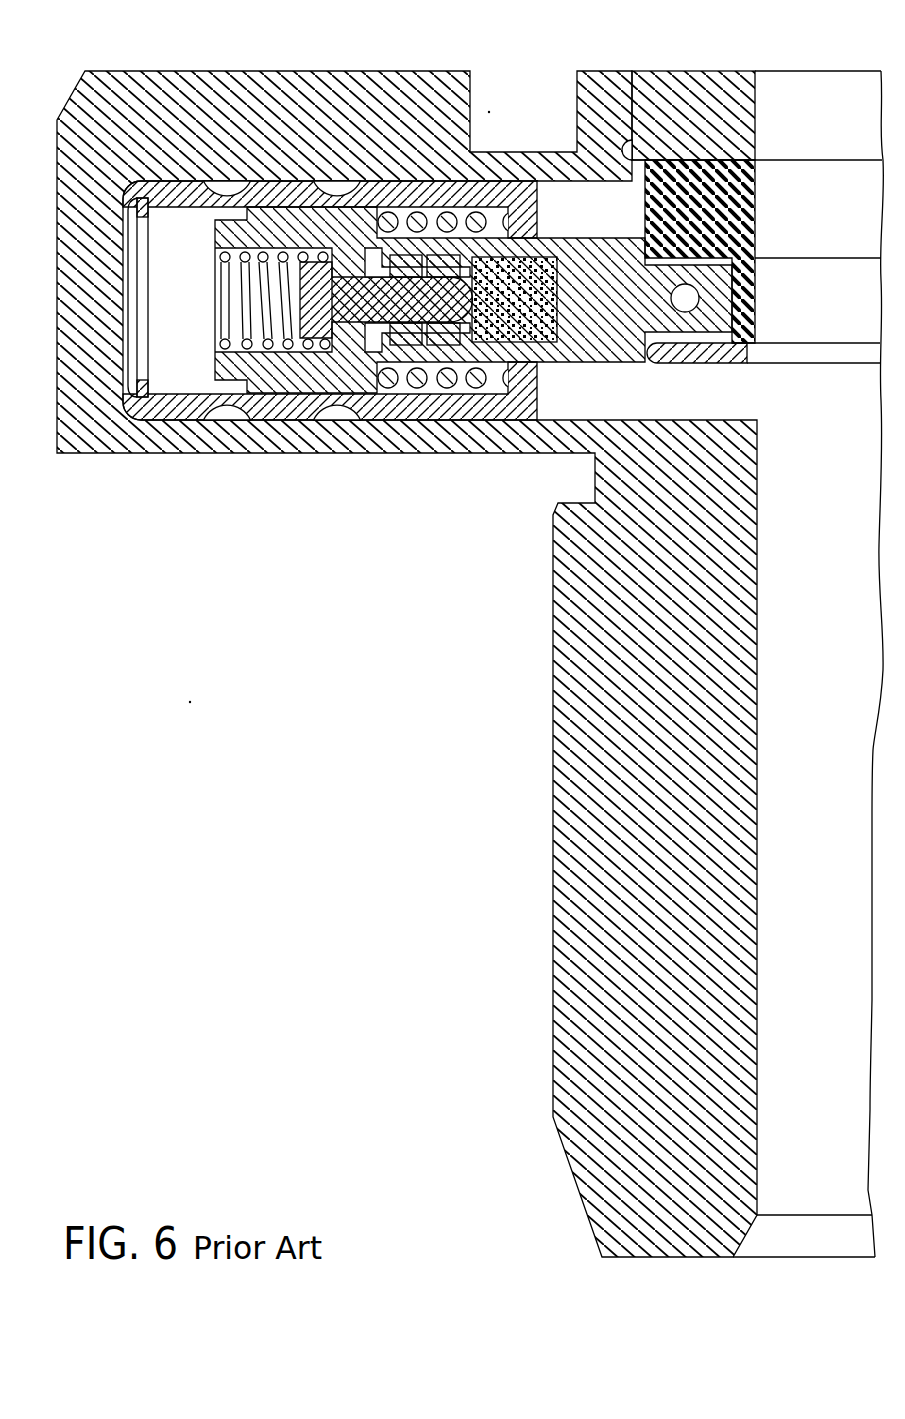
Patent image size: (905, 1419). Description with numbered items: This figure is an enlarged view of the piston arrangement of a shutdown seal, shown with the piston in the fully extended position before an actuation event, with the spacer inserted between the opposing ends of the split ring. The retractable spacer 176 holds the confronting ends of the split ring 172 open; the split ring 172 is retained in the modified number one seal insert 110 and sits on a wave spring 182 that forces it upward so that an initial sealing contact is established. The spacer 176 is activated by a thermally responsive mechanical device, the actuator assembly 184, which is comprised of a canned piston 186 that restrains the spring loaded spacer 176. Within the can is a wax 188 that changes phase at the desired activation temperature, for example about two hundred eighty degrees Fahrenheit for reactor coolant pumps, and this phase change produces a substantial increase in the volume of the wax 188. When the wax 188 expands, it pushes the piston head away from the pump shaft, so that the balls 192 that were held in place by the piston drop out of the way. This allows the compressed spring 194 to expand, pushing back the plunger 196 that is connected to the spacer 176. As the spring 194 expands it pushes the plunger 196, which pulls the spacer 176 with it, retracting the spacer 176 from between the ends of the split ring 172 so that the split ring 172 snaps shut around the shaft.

The modified number 1 seal insert 110 is at (88, 433).
The split ring 172 is at (757, 303).
The retractable spacer 176 is at (697, 262).
The wave spring 182 is at (705, 363).
The actuator assembly 184 is at (380, 418).
The canned piston 186 is at (195, 242).
The wax 188 is at (523, 268).
The balls 192 is at (336, 197).
The compressed spring 194 is at (443, 210).
The plunger 196 is at (297, 380).